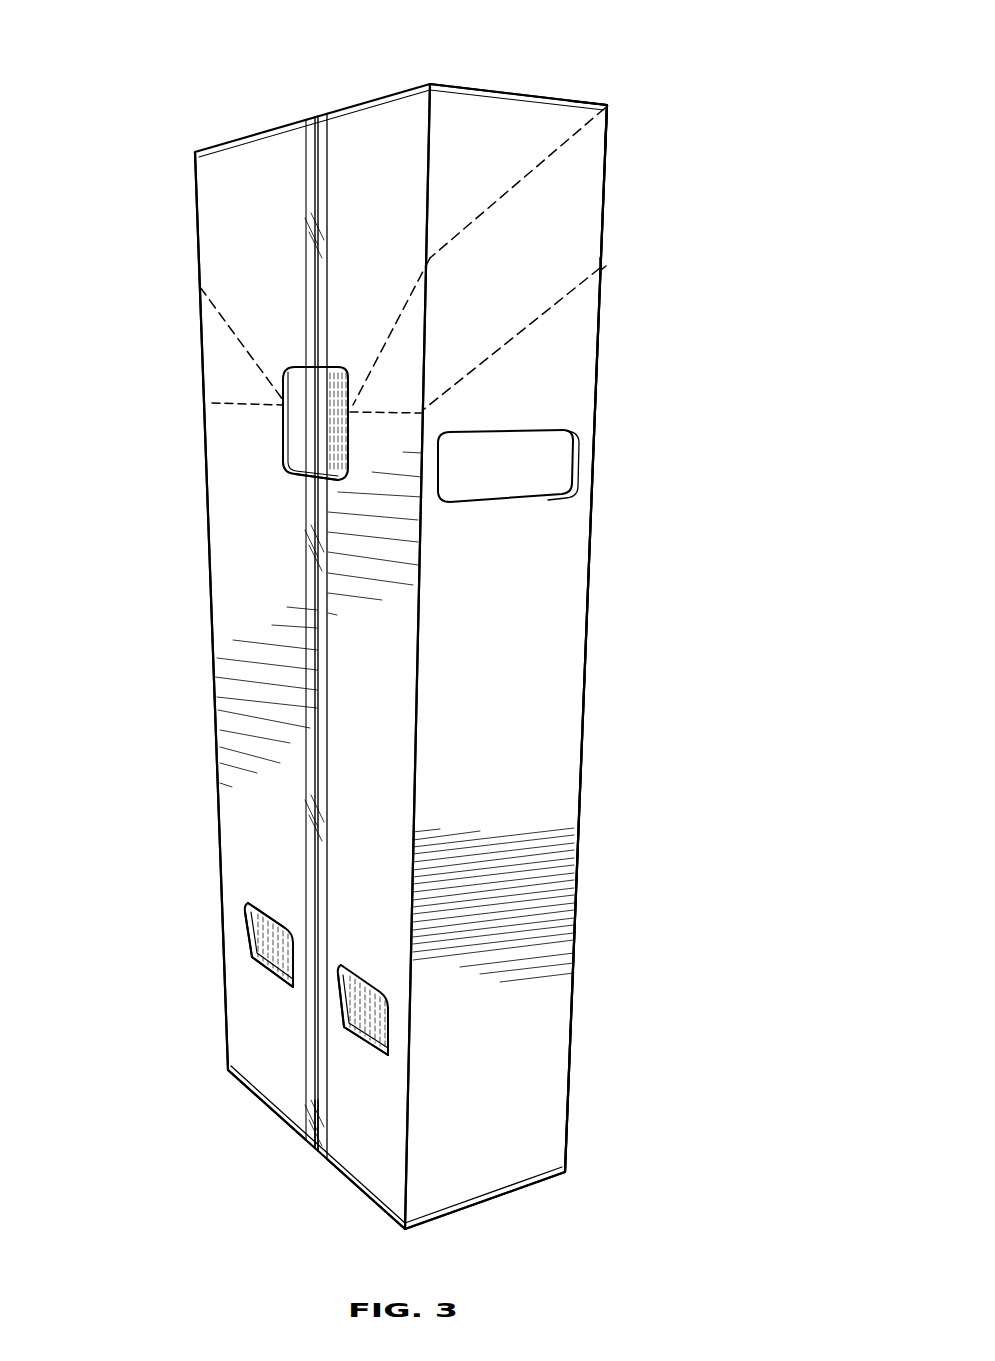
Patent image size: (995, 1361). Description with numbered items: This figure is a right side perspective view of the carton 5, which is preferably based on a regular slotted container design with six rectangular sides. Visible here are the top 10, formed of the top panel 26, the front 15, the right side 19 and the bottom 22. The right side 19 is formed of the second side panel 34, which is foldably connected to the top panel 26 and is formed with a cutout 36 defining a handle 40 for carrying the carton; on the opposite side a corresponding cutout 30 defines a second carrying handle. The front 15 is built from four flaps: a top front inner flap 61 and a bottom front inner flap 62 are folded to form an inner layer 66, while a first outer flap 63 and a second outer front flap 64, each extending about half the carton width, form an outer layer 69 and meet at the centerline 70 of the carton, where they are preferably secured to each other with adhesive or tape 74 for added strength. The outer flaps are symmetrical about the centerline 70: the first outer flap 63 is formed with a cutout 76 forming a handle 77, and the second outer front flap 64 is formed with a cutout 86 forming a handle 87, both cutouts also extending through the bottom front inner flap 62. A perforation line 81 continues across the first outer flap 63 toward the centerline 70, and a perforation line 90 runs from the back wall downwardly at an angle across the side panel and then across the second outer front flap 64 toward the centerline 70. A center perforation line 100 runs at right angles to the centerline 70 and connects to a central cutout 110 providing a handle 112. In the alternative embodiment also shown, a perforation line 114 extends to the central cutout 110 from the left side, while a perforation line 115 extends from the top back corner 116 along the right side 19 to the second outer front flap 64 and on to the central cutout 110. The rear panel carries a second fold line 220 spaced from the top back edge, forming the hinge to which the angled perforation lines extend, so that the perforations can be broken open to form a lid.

The carton 5 is at (590, 77).
The top 10 is at (533, 93).
The front 15 is at (258, 563).
The right side 19 is at (522, 728).
The bottom 22 is at (527, 1187).
The top panel 26 is at (253, 935).
The cutout 30 is at (463, 85).
The second side panel 34 is at (535, 638).
The cutout 36 is at (545, 427).
The handle 40 is at (530, 502).
The top front inner flap 61 is at (402, 88).
The bottom front inner flap 62 is at (292, 982).
The first outer flap 63 is at (277, 1073).
The second outer front flap 64 is at (365, 1137).
The inner layer 66 is at (340, 1030).
The outer layer 69 is at (362, 885).
The centerline 70 is at (317, 1115).
The adhesive or tape 74 is at (327, 1068).
The cutout 76 is at (257, 957).
The handle 77 is at (263, 908).
The perforation line 81 is at (260, 407).
The cutout 86 is at (370, 980).
The handle 87 is at (387, 1030).
The perforation line 90 is at (555, 310).
The center perforation line 100 is at (372, 412).
The central cutout 110 is at (350, 440).
The handle 112 is at (340, 485).
The perforation line 114 is at (247, 357).
The perforation line 115 is at (557, 150).
The top back corner 116 is at (612, 100).
The second fold line 220 is at (603, 263).